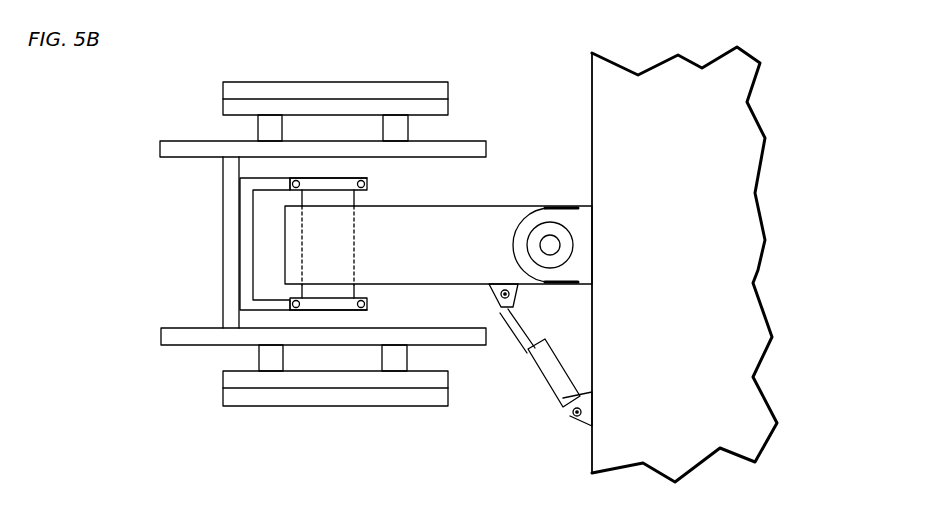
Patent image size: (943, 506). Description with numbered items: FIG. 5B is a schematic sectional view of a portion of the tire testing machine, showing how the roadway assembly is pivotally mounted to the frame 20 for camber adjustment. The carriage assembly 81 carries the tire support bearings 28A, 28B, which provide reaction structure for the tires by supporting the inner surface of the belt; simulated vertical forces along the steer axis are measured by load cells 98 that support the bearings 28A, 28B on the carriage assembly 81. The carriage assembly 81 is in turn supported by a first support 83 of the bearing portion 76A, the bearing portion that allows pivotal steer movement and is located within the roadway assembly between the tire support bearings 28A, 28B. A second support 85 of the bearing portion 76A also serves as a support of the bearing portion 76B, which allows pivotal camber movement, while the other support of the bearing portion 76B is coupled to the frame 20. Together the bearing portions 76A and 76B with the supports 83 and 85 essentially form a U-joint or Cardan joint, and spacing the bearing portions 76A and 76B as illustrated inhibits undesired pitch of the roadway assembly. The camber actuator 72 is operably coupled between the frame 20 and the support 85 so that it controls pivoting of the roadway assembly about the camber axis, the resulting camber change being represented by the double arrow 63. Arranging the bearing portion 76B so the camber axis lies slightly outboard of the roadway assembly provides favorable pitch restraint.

The frame 20 is at (737, 210).
The tire support bearing 28A is at (221, 405).
The tire support bearing 28B is at (222, 88).
The double arrow 63 is at (486, 246).
The second actuator 72 is at (541, 384).
The bearing portion 76A is at (285, 311).
The bearing portion 76B is at (560, 284).
The carriage assembly 81 is at (185, 148).
The first support 83 is at (270, 186).
The second support 85 is at (438, 245).
The load cells 98 is at (258, 128).